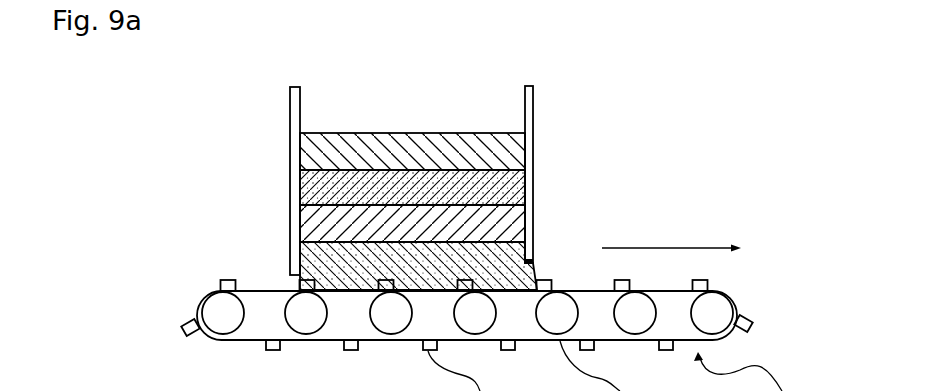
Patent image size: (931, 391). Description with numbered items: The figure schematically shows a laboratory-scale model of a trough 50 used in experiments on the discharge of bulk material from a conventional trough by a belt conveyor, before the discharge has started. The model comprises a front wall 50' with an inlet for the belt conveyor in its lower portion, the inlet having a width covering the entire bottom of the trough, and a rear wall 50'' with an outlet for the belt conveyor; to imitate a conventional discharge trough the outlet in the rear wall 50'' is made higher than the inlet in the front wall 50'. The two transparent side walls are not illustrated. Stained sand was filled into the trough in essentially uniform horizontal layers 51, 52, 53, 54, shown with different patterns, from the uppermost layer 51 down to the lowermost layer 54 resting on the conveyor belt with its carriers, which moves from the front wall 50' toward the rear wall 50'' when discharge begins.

The model of a trough 50 is at (344, 155).
The front wall 50' is at (266, 163).
The rear wall 50'' is at (566, 156).
The uppermost layer 51 is at (318, 142).
The horizontal layer 52 is at (318, 183).
The horizontal layer 53 is at (313, 215).
The lowermost layer 54 is at (315, 253).